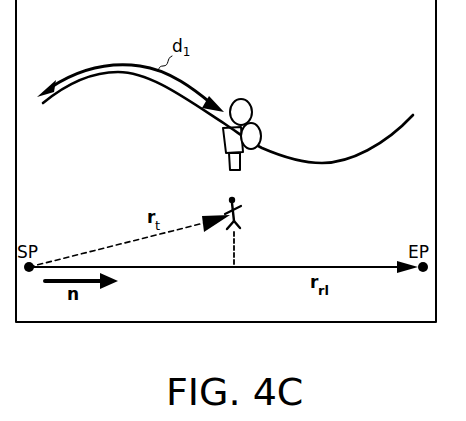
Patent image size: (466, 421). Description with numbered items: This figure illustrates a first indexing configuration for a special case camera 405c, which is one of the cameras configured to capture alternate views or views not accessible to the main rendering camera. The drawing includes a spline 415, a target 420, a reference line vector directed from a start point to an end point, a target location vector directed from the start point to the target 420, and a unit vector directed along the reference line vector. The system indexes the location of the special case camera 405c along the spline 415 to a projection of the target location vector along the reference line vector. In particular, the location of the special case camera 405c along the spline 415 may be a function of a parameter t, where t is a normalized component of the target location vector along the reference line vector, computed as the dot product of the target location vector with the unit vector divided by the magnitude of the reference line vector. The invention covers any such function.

The special case camera 405c is at (246, 101).
The spline 415 is at (358, 162).
The target 420 is at (239, 202).